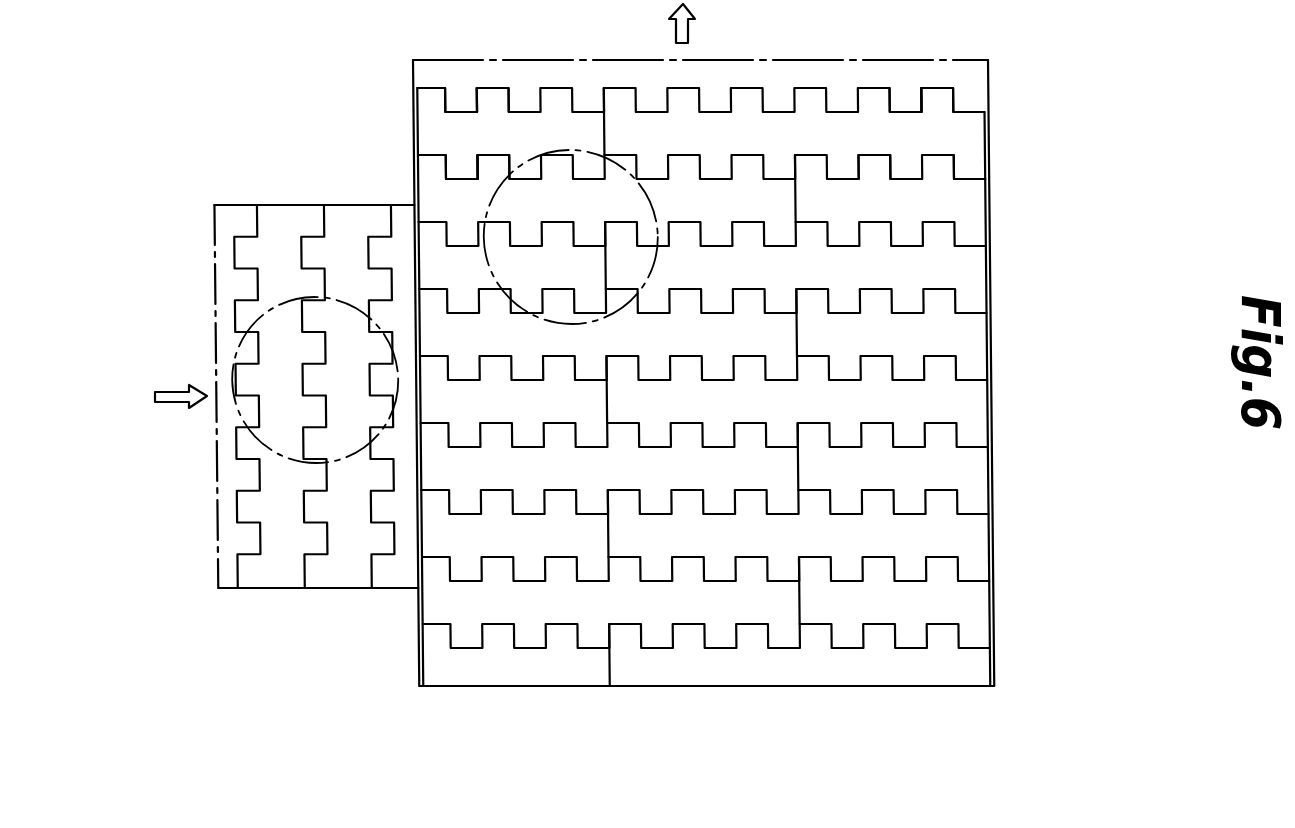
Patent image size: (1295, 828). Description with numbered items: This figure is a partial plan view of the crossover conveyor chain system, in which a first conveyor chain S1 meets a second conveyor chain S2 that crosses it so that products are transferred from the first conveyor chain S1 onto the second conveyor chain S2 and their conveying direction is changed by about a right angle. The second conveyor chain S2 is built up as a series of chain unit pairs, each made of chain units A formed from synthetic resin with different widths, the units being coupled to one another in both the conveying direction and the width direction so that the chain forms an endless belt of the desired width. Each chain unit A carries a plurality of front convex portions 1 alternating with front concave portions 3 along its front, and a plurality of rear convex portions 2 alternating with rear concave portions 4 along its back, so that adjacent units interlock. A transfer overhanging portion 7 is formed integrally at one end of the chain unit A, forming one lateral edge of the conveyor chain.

The front convex portion 1 is at (492, 97).
The rear convex portion 2 is at (452, 165).
The front concave portion 3 is at (460, 110).
The rear concave portion 4 is at (500, 160).
The transfer overhanging portion 7 is at (423, 118).
The chain unit A is at (557, 133).
The first conveyor chain S1 is at (235, 205).
The second conveyor chain S2 is at (992, 348).